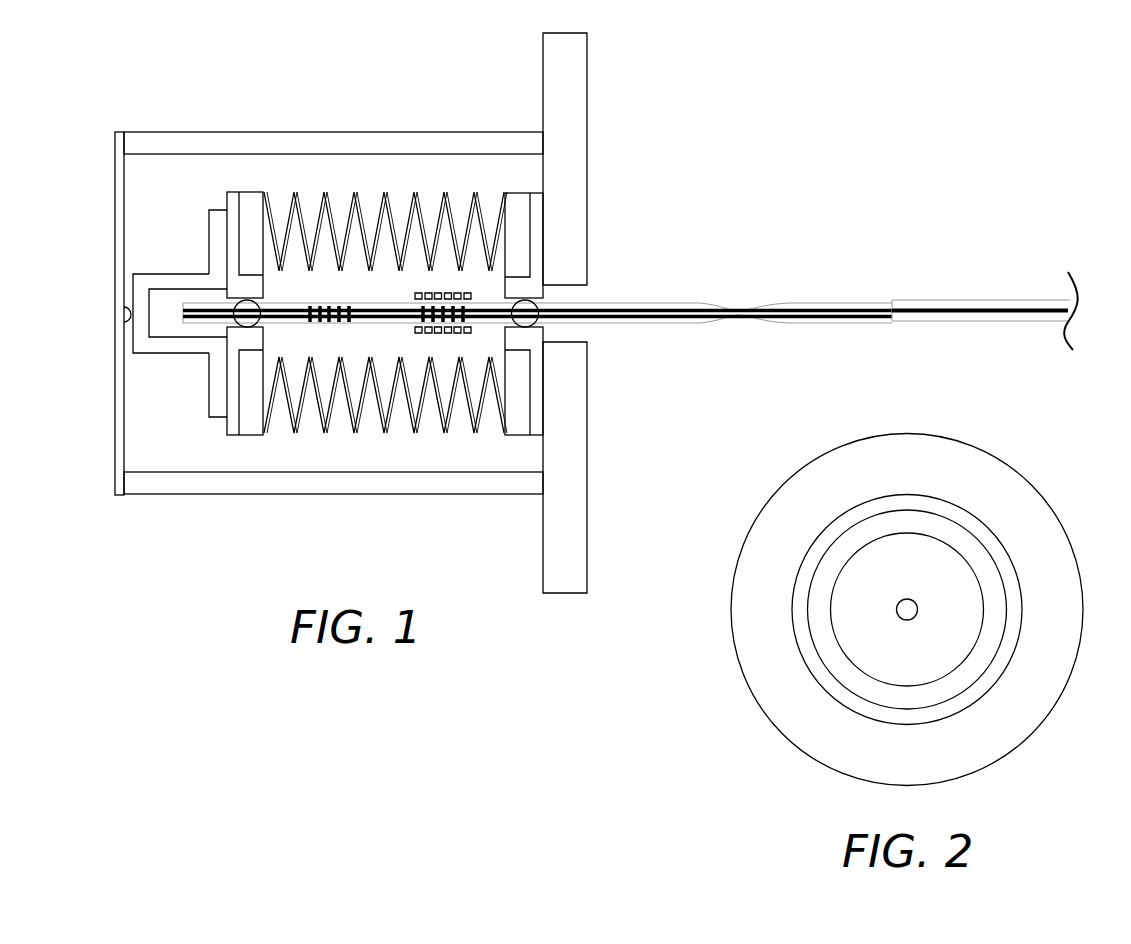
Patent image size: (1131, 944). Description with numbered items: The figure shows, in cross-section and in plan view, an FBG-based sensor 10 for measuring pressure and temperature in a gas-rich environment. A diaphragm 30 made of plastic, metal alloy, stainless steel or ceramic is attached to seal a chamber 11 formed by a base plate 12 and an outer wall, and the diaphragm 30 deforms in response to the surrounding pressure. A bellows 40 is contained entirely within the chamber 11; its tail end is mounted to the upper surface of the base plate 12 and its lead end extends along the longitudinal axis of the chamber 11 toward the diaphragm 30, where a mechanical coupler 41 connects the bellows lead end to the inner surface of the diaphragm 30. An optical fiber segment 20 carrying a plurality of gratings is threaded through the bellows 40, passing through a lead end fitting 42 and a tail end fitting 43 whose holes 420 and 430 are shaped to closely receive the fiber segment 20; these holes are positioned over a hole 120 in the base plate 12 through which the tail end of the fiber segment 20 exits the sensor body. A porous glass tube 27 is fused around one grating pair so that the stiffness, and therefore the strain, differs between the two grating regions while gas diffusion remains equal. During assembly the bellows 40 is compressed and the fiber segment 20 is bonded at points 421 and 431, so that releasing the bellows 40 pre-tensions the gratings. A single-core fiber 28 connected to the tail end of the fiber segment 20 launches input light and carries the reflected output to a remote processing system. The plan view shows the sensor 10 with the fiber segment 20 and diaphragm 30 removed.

In FIG. 1, the FBG-based sensor 10 is at (358, 69).
In FIG. 2, the FBG-based sensor 10 is at (918, 414).
In FIG. 1, the chamber 11 is at (455, 450).
In FIG. 1, the base plate 12 is at (574, 95).
In FIG. 2, the base plate 12 is at (1022, 503).
In FIG. 1, the hole in base plate 120 is at (588, 332).
In FIG. 1, the optical fiber segment 20 is at (661, 305).
In FIG. 2, the optical fiber segment 20 is at (907, 609).
In FIG. 1, the porous glass tube 27 is at (447, 297).
In FIG. 1, the single-core fiber 28 is at (983, 305).
In FIG. 1, the diaphragm 30 is at (116, 190).
In FIG. 1, the bellows 40 is at (383, 203).
In FIG. 1, the mechanical coupler 41 is at (186, 278).
In FIG. 2, the mechanical coupler 41 is at (952, 656).
In FIG. 1, the lead end fitting 42 is at (232, 203).
In FIG. 2, the lead end fitting 42 is at (988, 581).
In FIG. 1, the hole in lead end fitting 420 is at (228, 327).
In FIG. 1, the bonding point 421 is at (262, 326).
In FIG. 1, the tail end fitting 43 is at (539, 198).
In FIG. 1, the hole in tail end fitting 430 is at (545, 304).
In FIG. 1, the bonding point 431 is at (514, 323).